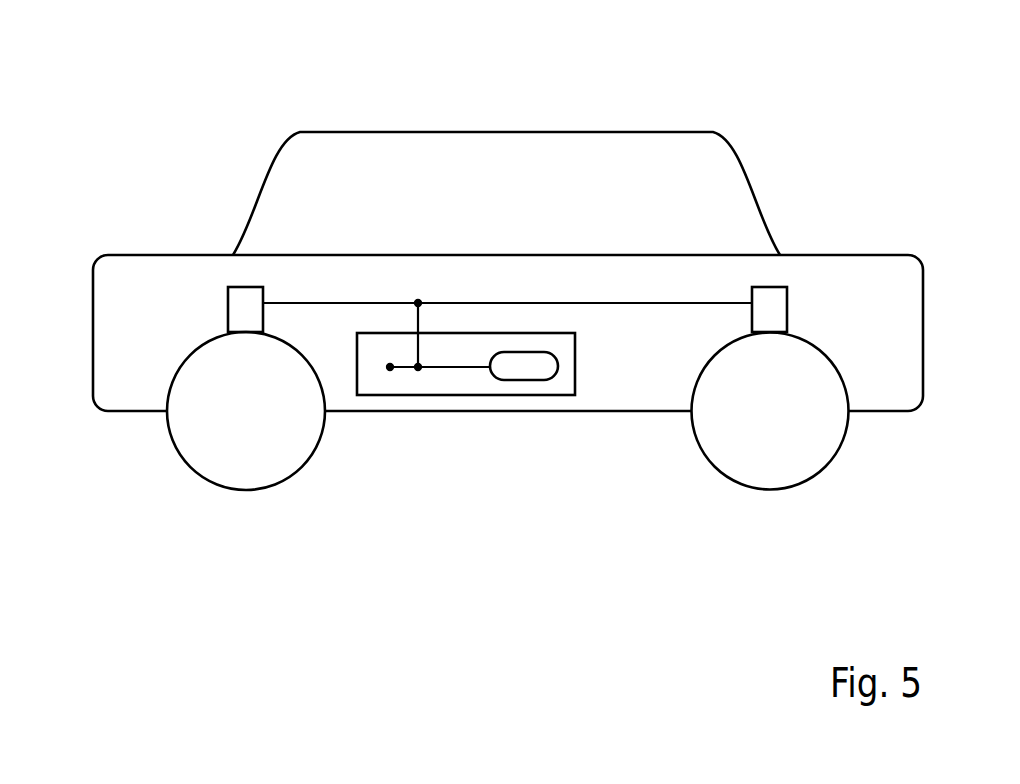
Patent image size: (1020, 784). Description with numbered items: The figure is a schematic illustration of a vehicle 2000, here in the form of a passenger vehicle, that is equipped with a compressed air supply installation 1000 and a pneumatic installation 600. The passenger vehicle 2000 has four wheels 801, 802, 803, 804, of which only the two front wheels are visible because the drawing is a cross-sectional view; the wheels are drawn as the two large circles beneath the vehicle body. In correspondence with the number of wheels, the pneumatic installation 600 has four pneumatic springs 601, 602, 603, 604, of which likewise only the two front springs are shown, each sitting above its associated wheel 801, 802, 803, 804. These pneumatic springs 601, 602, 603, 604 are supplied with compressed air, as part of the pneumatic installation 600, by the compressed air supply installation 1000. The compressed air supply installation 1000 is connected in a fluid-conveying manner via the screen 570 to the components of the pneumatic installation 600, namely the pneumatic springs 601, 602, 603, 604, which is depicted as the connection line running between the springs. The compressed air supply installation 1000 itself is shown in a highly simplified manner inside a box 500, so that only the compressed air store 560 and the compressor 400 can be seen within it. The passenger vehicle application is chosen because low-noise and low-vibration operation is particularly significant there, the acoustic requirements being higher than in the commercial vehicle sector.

The vehicle 2000 is at (780, 46).
The pneumatic installation 600 is at (148, 326).
The compressed air supply installation 1000 is at (497, 176).
The pneumatic spring 601 is at (206, 253).
The pneumatic spring 602 is at (243, 274).
The pneumatic spring 603 is at (811, 253).
The pneumatic spring 604 is at (777, 274).
The screen 570 is at (646, 306).
The control unit 500 is at (466, 402).
The compressor 400 is at (390, 372).
The compressed air store 560 is at (523, 372).
The wheel 801 is at (237, 474).
The wheel 802 is at (243, 510).
The wheel 803 is at (780, 475).
The wheel 804 is at (770, 411).